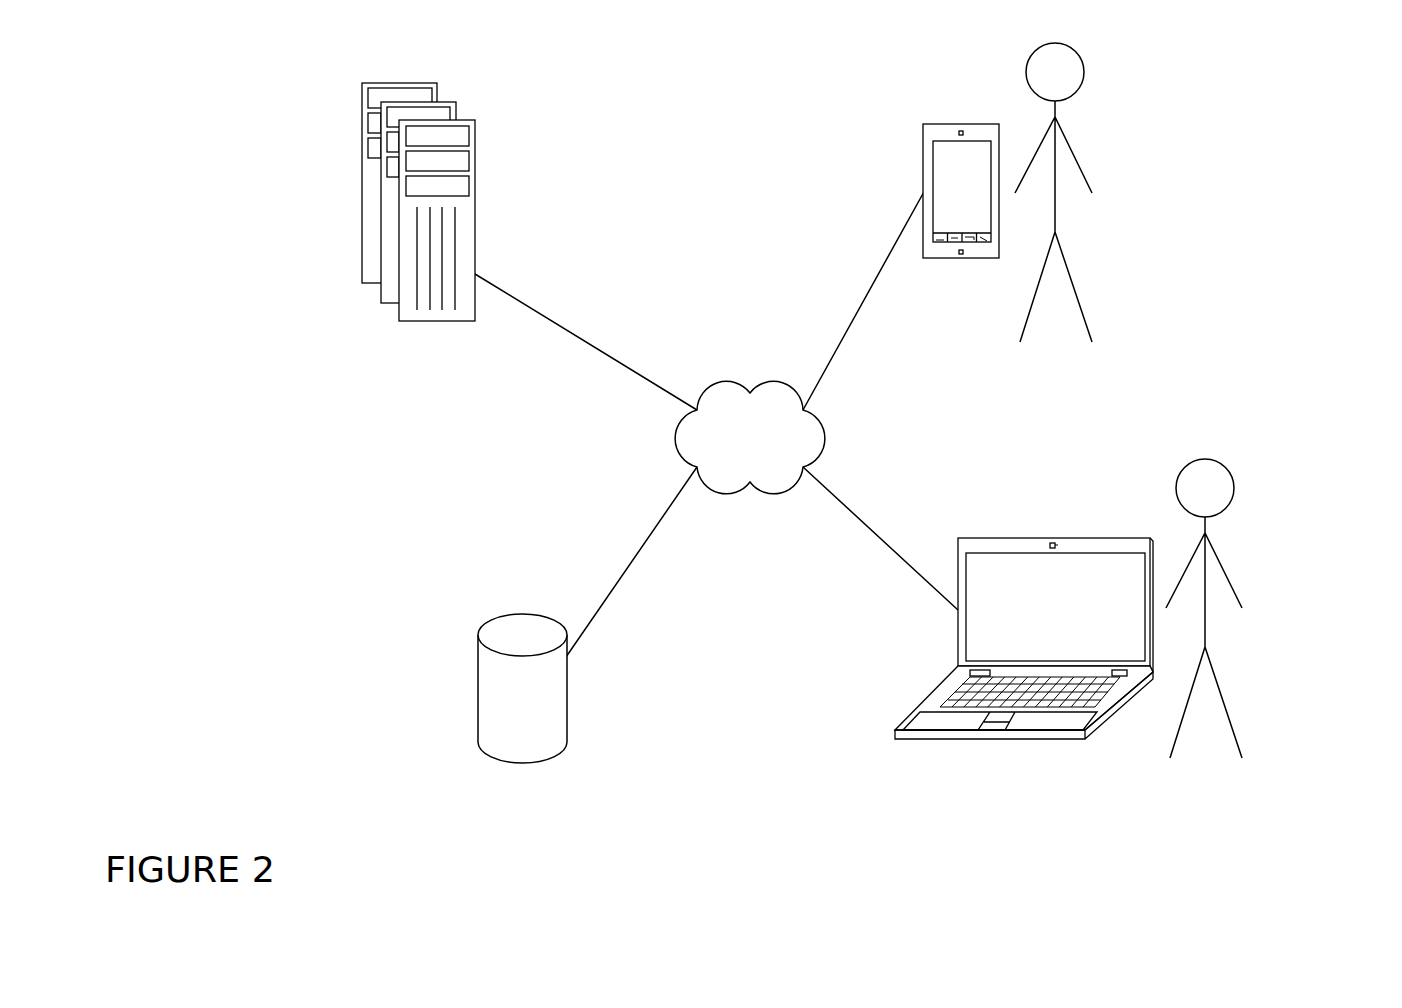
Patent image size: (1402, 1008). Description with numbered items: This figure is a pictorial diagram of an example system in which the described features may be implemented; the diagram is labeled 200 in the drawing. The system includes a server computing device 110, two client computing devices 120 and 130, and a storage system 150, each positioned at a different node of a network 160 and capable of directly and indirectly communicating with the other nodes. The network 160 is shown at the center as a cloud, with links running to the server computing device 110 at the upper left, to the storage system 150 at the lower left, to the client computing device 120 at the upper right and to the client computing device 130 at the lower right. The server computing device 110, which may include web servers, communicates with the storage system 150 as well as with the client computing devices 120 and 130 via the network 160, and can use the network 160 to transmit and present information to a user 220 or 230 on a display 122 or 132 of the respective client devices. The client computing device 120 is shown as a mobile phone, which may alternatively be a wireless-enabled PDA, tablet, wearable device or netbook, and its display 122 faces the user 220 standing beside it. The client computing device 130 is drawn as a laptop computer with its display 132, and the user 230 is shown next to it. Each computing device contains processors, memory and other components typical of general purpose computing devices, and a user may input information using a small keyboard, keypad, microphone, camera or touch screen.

The server computing device 110 is at (475, 163).
The client computing device 120 is at (902, 191).
The display 122 is at (933, 185).
The client computing device 130 is at (995, 638).
The display 132 is at (966, 648).
The storage system 150 is at (567, 710).
The network 160 is at (750, 437).
The system 200 is at (210, 826).
The user 220 is at (1087, 177).
The user 230 is at (1237, 597).